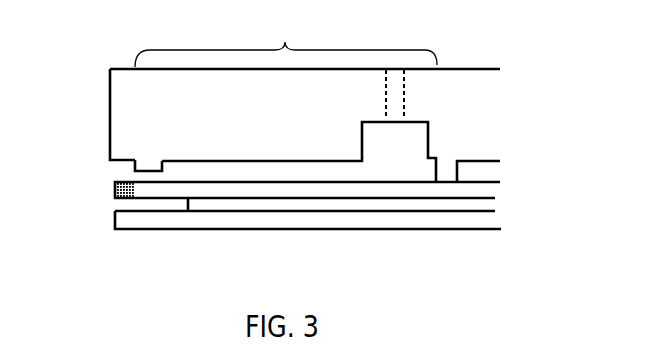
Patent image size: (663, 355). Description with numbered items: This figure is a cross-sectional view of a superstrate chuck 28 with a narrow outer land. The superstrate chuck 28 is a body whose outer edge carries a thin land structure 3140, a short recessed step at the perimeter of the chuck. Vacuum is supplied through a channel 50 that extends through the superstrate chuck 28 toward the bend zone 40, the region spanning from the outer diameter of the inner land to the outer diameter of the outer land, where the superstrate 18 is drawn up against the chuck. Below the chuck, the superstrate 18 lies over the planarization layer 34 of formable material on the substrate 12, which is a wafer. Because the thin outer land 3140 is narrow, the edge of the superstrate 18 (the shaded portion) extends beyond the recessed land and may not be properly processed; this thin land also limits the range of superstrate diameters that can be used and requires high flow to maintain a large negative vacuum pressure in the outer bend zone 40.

The substrate 12 is at (132, 218).
The superstrate 18 is at (487, 189).
The superstrate chuck 28 is at (152, 113).
The planarization layer 34 is at (487, 204).
The bend zone 40 is at (285, 42).
The channel 50 is at (397, 100).
The thin outer land 3140 is at (135, 170).